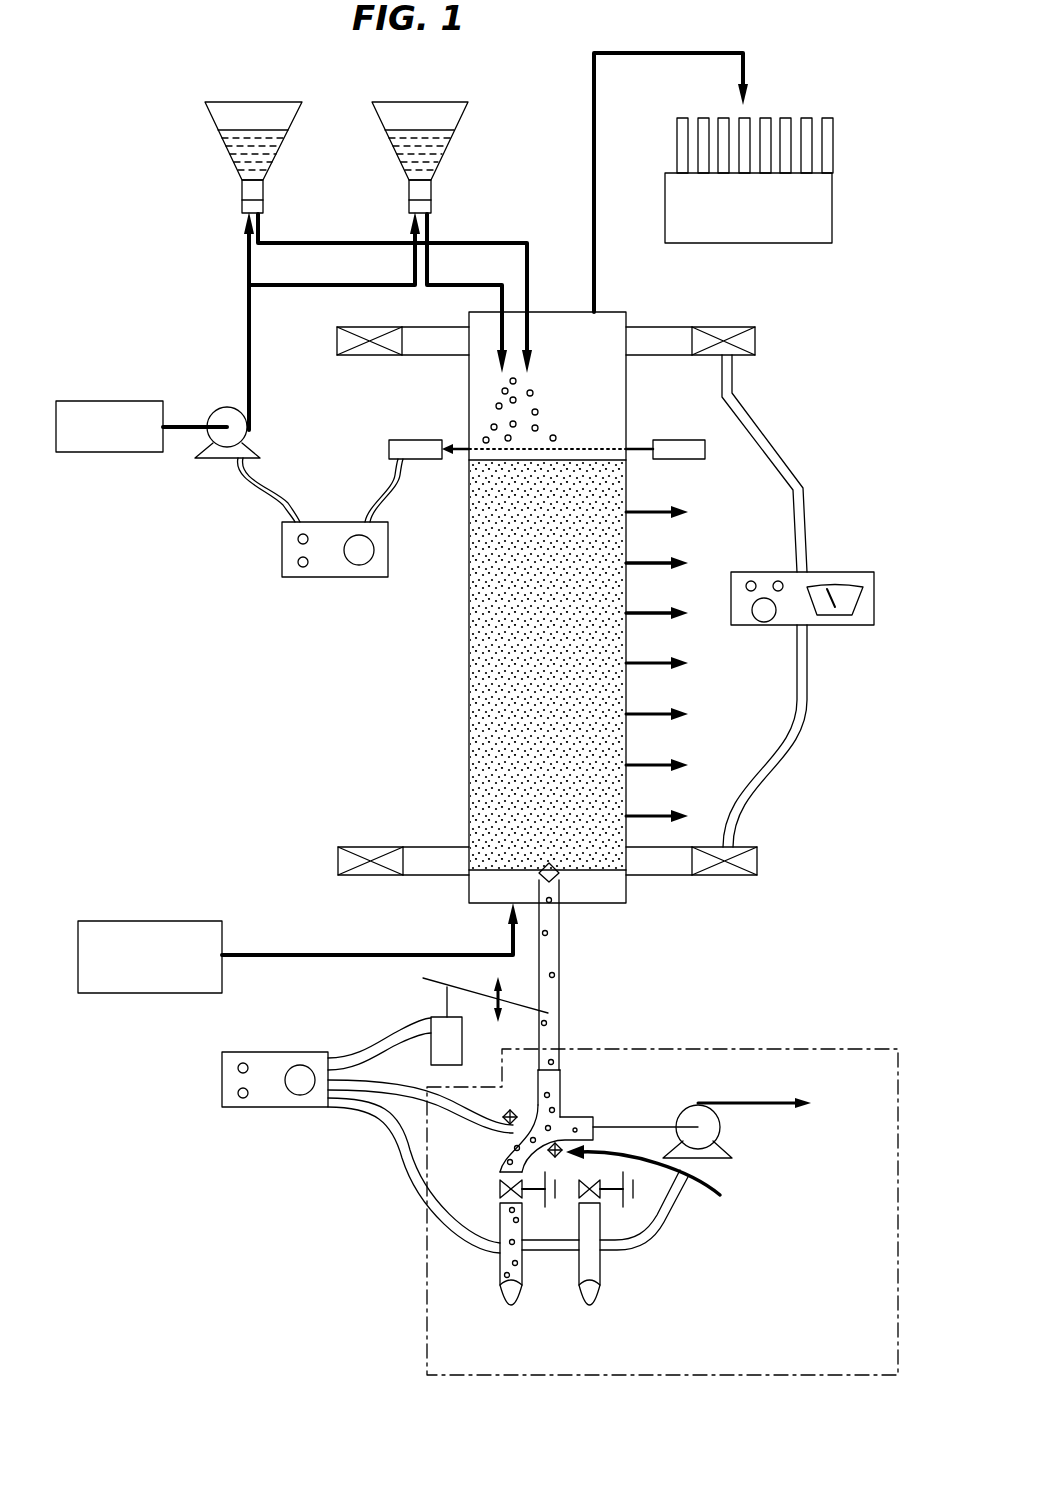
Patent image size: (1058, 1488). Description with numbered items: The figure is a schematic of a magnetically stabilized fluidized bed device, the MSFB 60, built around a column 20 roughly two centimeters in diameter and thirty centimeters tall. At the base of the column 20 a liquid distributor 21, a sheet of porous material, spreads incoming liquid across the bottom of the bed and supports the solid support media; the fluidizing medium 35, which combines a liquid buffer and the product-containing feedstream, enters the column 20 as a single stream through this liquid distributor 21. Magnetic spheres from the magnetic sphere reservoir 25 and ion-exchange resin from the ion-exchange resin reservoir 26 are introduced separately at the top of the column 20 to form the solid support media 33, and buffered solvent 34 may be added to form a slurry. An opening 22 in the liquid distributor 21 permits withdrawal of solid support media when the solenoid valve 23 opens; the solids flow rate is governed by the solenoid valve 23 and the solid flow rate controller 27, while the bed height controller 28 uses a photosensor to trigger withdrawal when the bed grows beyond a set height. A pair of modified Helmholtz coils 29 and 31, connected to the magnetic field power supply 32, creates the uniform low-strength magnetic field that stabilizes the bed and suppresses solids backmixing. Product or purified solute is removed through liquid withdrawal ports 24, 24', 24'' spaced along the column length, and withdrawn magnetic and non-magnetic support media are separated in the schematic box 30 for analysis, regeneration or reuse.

The column 20 is at (627, 690).
The liquid distributor 21 is at (480, 885).
The opening 22 is at (562, 880).
The solenoid valve 23 is at (560, 872).
The liquid withdrawal port 24 is at (679, 649).
The liquid withdrawal port 24' is at (681, 551).
The liquid withdrawal port 24'' is at (693, 637).
The magnetic sphere reservoir 25 is at (230, 143).
The ion-exchange resin reservoir 26 is at (450, 140).
The solid flow rate controller 27 is at (221, 1080).
The bed height controller 28 is at (282, 548).
The modified Helmholtz coil 29 is at (757, 338).
The schematic box 30 is at (775, 1048).
The modified Helmholtz coil 31 is at (757, 856).
The magnetic field power supply 32 is at (837, 572).
The solid support media 33 is at (534, 388).
The buffered solvent 34 is at (118, 402).
The fluidizing medium 35 is at (162, 921).
The MSFB 60 is at (360, 715).